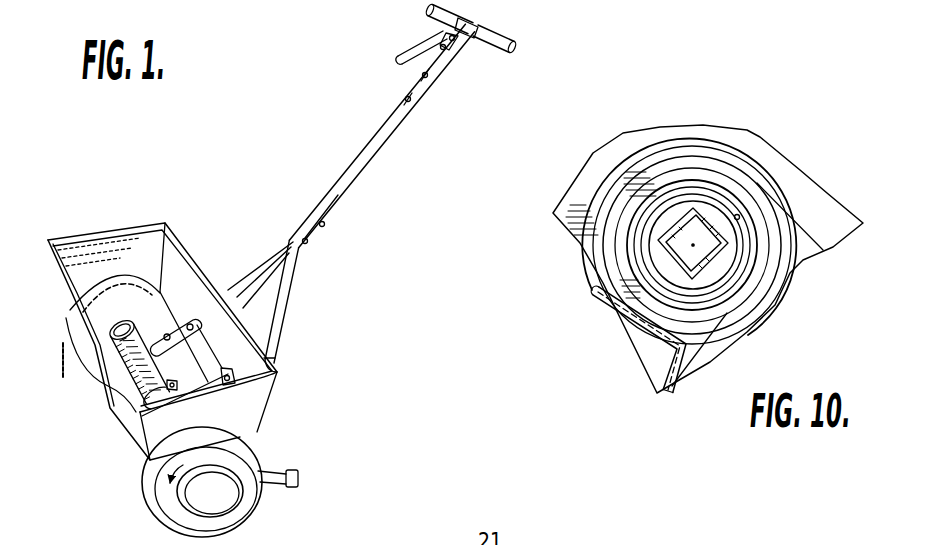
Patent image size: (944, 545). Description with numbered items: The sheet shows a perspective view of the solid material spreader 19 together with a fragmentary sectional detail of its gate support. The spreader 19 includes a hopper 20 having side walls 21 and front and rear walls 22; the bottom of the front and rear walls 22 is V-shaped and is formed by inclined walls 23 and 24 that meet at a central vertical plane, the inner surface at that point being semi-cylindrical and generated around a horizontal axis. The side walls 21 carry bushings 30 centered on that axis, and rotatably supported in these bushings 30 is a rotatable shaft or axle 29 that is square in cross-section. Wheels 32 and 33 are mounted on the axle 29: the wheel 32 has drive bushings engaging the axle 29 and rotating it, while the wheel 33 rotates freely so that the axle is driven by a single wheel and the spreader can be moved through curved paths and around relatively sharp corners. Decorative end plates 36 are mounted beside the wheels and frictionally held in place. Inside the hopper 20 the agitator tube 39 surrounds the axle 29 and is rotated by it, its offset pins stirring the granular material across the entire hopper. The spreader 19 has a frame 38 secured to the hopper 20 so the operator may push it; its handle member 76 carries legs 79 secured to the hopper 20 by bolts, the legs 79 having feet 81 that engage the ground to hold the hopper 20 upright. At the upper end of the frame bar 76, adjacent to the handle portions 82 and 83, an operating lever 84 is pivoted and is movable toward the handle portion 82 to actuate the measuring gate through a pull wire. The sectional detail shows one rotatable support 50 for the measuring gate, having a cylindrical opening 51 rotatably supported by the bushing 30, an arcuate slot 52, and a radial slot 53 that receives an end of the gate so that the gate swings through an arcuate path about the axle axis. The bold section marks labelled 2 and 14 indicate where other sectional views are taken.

In FIG. 1, the section line 2- 2 is at (283, 287).
In FIG. 1, the spreader 14 is at (370, 84).
In FIG. 1, the solid material spreader 19 is at (318, 175).
In FIG. 1, the hopper 20 is at (274, 357).
In FIG. 1, the side walls 21 is at (133, 234).
In FIG. 10, the side walls 21 is at (647, 130).
In FIG. 1, the front and rear walls 22 is at (213, 284).
In FIG. 1, the inclined wall 23 is at (104, 350).
In FIG. 1, the inclined wall 24 is at (167, 308).
In FIG. 10, the rotatable shaft or axle 29 is at (688, 213).
In FIG. 10, the bushings 30 is at (718, 198).
In FIG. 1, the wheel 32 is at (243, 508).
In FIG. 1, the wheel 33 is at (72, 343).
In FIG. 1, the end plates 36 is at (190, 505).
In FIG. 1, the frame 38 is at (397, 156).
In FIG. 1, the agitator tube 39 is at (162, 360).
In FIG. 10, the rotatable support 50 is at (718, 320).
In FIG. 10, the cylindrical opening 51 is at (740, 218).
In FIG. 10, the arcuate slot 52 is at (617, 344).
In FIG. 10, the radial slot 53 is at (684, 378).
In FIG. 1, the handle member 76 is at (360, 187).
In FIG. 1, the legs 79 is at (243, 282).
In FIG. 1, the feet 81 is at (282, 476).
In FIG. 1, the handle portion 82 is at (455, 8).
In FIG. 1, the handle portion 83 is at (513, 38).
In FIG. 1, the operating lever 84 is at (426, 50).